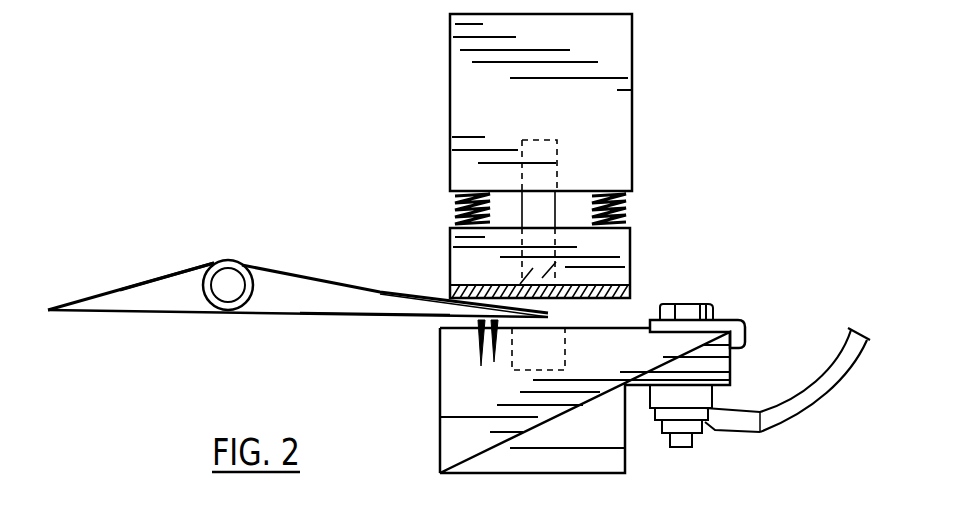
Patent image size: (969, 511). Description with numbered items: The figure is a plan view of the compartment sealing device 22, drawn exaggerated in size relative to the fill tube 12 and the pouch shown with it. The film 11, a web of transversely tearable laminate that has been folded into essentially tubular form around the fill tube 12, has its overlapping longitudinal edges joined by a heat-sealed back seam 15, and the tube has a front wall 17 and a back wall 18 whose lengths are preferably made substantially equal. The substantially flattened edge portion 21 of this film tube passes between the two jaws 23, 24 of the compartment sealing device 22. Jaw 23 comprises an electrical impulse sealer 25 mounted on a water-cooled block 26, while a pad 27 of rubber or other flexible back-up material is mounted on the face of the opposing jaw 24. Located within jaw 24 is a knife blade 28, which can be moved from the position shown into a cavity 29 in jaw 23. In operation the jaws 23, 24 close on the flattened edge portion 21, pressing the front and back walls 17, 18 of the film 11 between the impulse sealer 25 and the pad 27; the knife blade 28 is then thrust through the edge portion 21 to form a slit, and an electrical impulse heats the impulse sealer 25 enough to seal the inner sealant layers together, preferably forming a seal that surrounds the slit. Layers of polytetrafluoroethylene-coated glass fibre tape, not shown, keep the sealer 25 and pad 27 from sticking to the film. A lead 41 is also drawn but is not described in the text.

The film 11 is at (160, 318).
The fill tube 12 is at (258, 266).
The heat-sealed back seam 15 is at (214, 262).
The front wall 17 is at (378, 291).
The back wall 18 is at (392, 320).
The flattened edge portion 21 is at (557, 317).
The compartment sealing device 22 is at (640, 134).
The jaw 23 is at (440, 437).
The jaw 24 is at (448, 244).
The electrical impulse sealer 25 is at (483, 360).
The water-cooled block 26 is at (448, 343).
The pad 27 is at (448, 290).
The knife blade 28 is at (544, 203).
The cavity 29 is at (565, 347).
The cable 41 is at (826, 378).